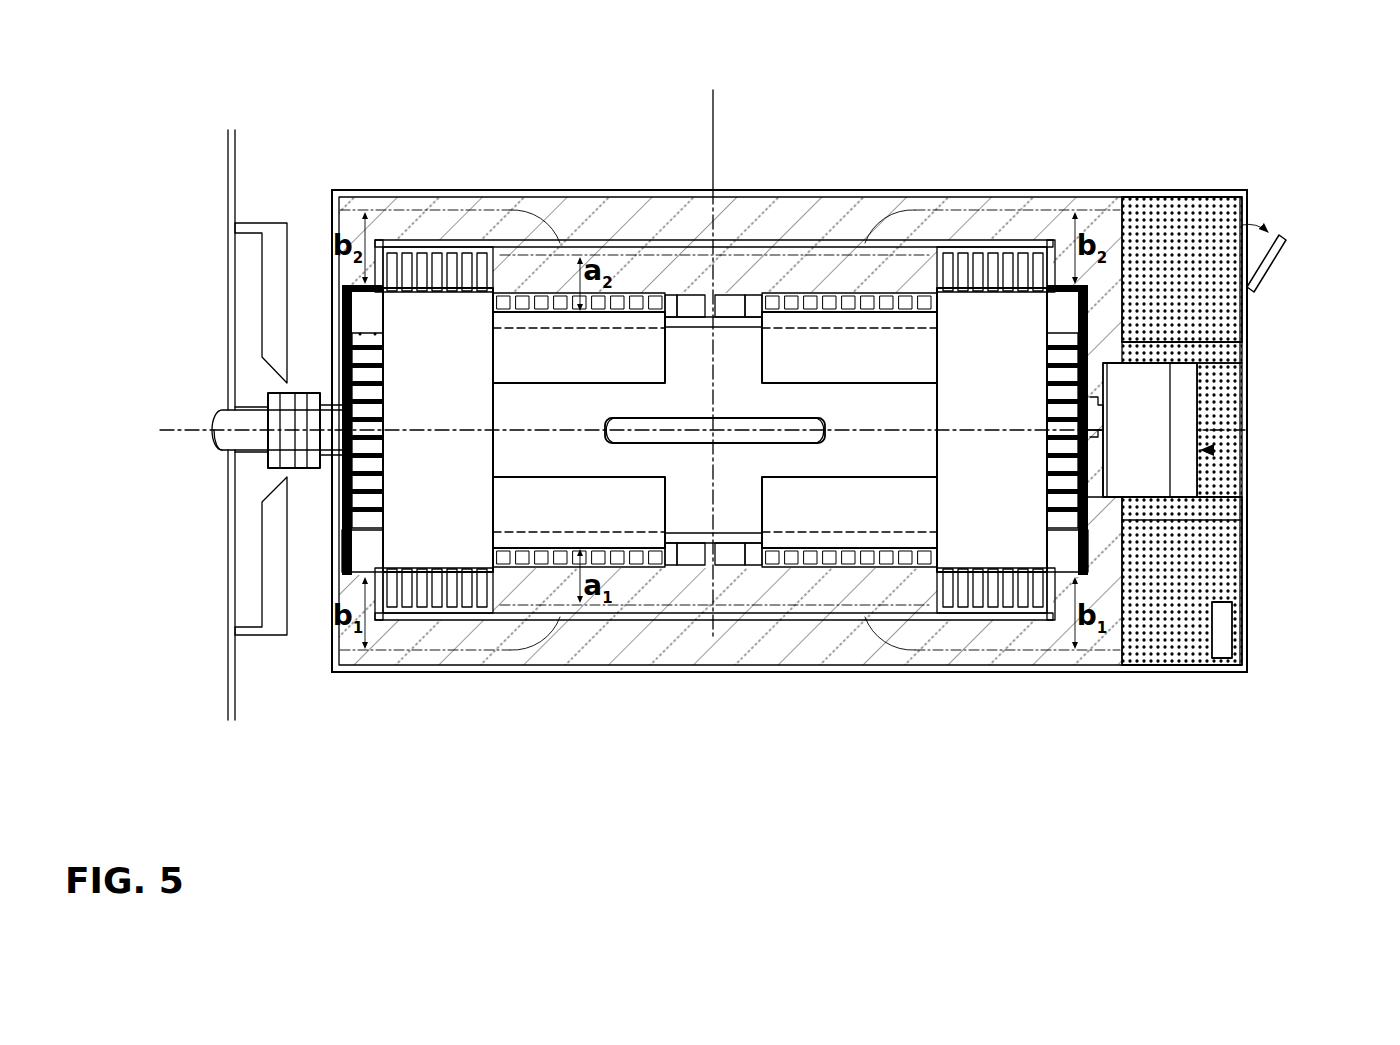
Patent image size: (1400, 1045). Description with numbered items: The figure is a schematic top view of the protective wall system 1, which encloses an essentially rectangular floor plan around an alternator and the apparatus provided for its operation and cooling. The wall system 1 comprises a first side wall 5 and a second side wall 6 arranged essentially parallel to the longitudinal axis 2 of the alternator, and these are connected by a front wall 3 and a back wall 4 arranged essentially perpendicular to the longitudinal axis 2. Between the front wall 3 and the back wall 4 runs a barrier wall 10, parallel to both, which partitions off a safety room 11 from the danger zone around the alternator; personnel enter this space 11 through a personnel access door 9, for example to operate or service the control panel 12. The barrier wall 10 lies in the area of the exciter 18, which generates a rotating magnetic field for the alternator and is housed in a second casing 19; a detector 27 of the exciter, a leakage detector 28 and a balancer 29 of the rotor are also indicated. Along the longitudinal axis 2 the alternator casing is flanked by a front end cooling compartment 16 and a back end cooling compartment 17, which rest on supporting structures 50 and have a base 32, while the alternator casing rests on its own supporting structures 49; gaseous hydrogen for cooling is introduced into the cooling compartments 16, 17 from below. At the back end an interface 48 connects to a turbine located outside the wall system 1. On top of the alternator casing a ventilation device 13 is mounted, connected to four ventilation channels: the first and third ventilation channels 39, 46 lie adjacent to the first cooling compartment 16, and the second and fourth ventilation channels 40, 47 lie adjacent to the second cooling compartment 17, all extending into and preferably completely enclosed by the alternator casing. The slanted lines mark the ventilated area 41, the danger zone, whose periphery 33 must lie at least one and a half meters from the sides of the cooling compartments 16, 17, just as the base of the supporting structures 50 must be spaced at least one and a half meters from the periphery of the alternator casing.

The protective wall system 1 is at (610, 160).
The longitudinal axis 2 is at (687, 425).
The front wall 3 is at (1243, 592).
The back wall 4 is at (335, 268).
The first side wall 5 is at (683, 672).
The second side wall 6 is at (709, 347).
The personnel access door 9 is at (1265, 258).
The barrier wall 10 is at (1115, 230).
The safety room 11 is at (1172, 627).
The control panel 12 is at (1222, 628).
The ventilation device 13 is at (668, 437).
The front end cooling compartment 16 is at (973, 498).
The back end cooling compartment 17 is at (421, 498).
The exciter 18 is at (1143, 465).
The second casing 19 is at (1212, 450).
The detector of exciter 27 is at (1095, 418).
The leakage detector 28 is at (1243, 322).
The balancer of rotor 29 is at (273, 460).
The base of cooling compartments 32 is at (447, 275).
The periphery of ventilated area 33 is at (980, 197).
The first ventilation channel 39 is at (816, 518).
The second ventilation channel 40 is at (568, 518).
The ventilated area 41 is at (877, 268).
The third ventilation channel 46 is at (816, 368).
The fourth ventilation channel 47 is at (568, 368).
The interface to turbine 48 is at (300, 415).
The supporting structures of alternator casing 49 is at (812, 557).
The supporting structures of cooling compartments 50 is at (417, 625).